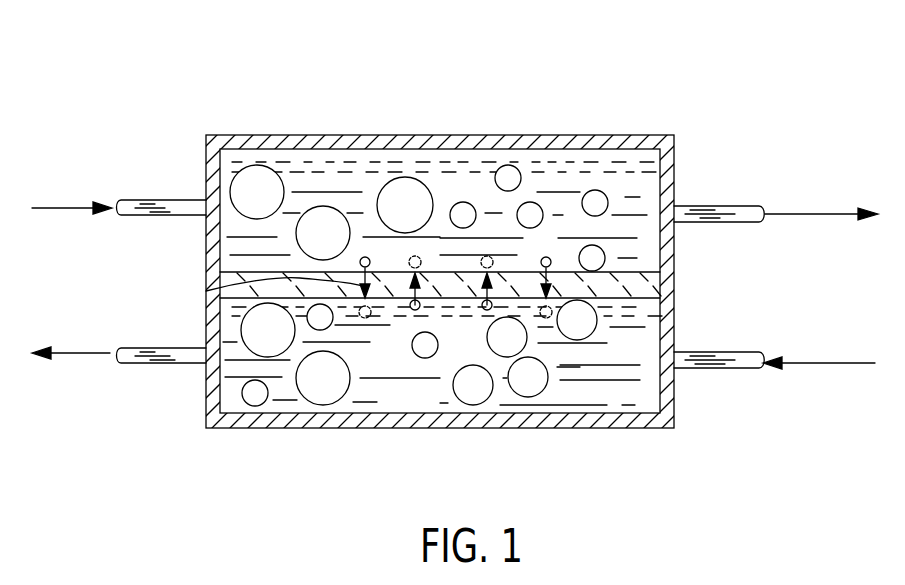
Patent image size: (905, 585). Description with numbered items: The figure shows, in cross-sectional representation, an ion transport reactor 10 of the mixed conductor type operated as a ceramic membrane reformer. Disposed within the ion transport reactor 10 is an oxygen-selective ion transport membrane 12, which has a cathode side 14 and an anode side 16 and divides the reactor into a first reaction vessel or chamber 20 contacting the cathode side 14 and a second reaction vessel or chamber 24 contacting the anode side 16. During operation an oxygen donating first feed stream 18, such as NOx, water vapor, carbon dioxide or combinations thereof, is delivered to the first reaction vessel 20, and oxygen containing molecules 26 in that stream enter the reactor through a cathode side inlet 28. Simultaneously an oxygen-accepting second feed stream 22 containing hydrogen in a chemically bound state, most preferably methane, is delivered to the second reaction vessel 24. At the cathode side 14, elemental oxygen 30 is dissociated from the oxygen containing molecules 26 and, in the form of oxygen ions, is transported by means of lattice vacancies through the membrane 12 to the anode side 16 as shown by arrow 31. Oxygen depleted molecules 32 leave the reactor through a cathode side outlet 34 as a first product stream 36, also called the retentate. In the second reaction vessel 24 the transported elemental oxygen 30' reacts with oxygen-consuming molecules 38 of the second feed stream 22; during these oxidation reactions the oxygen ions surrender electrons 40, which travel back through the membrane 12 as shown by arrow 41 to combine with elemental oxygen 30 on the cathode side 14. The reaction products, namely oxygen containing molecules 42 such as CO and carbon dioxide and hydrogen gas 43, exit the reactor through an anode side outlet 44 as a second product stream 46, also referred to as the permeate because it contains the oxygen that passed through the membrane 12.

The ion transport reactor 10 is at (228, 90).
The oxygen-selective ion transport membrane 12 is at (648, 287).
The cathode side 14 is at (641, 272).
The anode side 16 is at (636, 304).
The oxygen donating first feed stream 18 is at (57, 208).
The first reaction vessel 20 is at (565, 185).
The oxygen-accepting second feed stream 22 is at (818, 368).
The second reaction vessel 24 is at (380, 398).
The oxygen containing molecules 26 is at (258, 185).
The cathode side inlet 28 is at (145, 200).
The elemental oxygen 30 is at (387, 244).
The elemental oxygen 30' is at (376, 342).
The arrow 31 is at (206, 291).
The oxygen depleted molecules 32 is at (510, 177).
The cathode side outlet 34 is at (718, 206).
The first product stream 36 is at (797, 214).
The oxygen-consuming molecules 38 is at (527, 390).
The electrons 40 is at (415, 309).
The arrow 41 is at (420, 294).
The oxygen containing molecules 42 is at (323, 400).
The hydrogen gas 43 is at (255, 398).
The anode side outlet 44 is at (160, 363).
The second product stream 46 is at (82, 355).